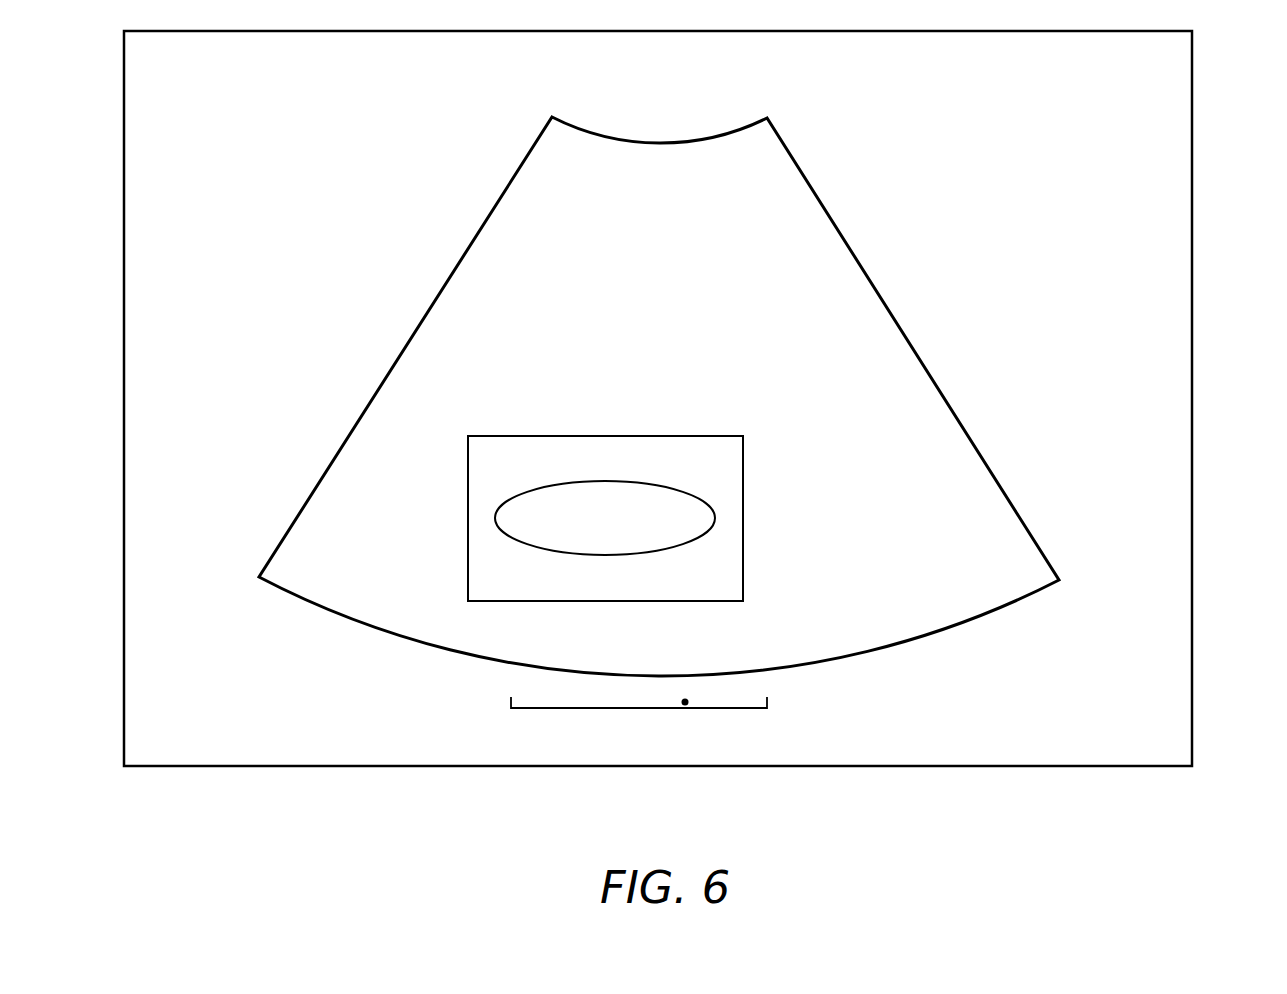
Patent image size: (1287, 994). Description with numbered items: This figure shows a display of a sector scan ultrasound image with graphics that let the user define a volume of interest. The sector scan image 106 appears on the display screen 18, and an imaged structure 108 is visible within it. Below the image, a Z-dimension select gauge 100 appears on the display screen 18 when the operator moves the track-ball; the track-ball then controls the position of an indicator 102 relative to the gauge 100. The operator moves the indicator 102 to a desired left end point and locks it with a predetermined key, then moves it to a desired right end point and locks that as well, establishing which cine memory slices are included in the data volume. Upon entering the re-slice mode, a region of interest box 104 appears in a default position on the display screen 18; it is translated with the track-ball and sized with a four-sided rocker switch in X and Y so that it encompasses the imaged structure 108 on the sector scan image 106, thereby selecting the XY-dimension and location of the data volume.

The display screen 18 is at (1192, 237).
The Z-dimension select gauge 100 is at (522, 712).
The indicator 102 is at (688, 701).
The region of interest box 104 is at (743, 510).
The sector scan image 106 is at (843, 235).
The imaged structure 108 is at (647, 482).